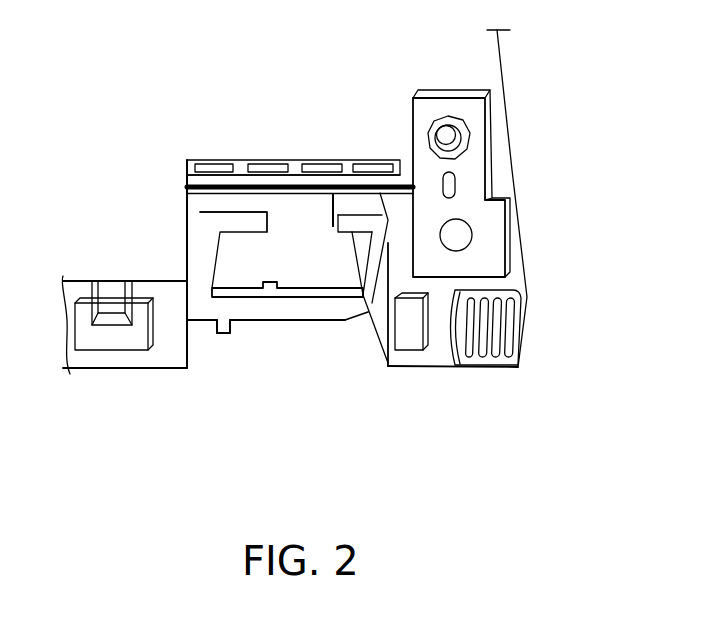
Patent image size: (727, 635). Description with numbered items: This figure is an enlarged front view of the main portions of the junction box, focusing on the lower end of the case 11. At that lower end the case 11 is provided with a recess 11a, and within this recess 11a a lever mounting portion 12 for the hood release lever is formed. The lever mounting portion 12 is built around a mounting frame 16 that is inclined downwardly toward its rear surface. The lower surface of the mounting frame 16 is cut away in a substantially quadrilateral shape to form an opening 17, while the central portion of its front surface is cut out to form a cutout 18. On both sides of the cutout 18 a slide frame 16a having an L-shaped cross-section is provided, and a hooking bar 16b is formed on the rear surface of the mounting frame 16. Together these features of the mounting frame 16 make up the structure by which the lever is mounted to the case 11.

The case 11 is at (505, 122).
The recess 11a is at (187, 212).
The lever mounting portion 12 is at (260, 342).
The mounting frame 16 is at (200, 310).
The slide frame 16a is at (258, 207).
The hooking bar 16b is at (297, 310).
The opening 17 is at (323, 255).
The cutout 18 is at (293, 207).